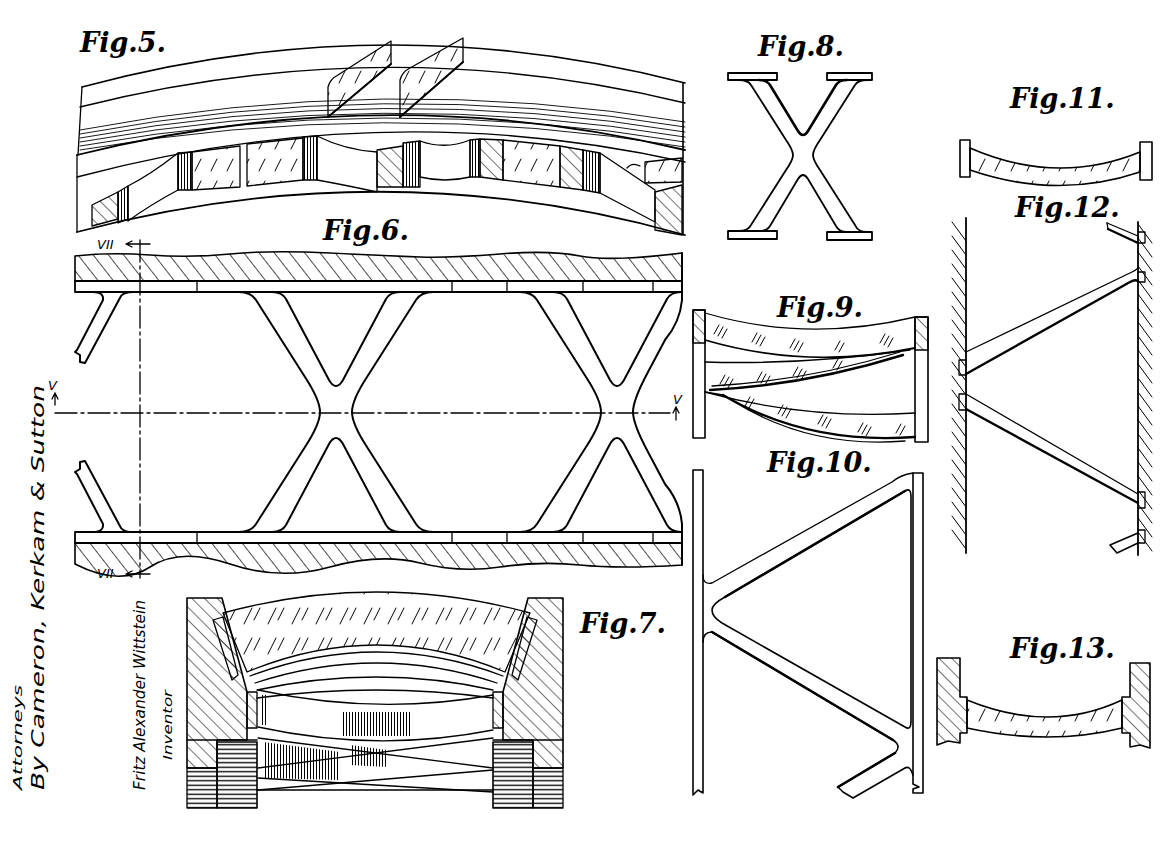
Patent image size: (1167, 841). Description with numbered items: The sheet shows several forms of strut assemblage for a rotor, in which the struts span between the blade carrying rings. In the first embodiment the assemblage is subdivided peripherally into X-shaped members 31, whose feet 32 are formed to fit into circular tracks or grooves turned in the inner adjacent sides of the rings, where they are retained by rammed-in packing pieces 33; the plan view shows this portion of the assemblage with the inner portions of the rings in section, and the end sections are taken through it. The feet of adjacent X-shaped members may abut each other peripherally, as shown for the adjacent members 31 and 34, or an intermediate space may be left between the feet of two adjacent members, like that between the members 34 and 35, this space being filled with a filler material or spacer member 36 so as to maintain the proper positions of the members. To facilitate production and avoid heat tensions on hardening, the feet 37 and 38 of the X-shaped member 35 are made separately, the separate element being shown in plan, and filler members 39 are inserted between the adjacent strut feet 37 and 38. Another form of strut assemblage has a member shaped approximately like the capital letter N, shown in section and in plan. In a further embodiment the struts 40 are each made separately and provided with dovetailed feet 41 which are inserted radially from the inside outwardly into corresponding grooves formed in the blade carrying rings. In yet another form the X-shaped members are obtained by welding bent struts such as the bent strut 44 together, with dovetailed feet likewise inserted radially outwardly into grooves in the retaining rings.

In FIG. 5, the X-shaped member 31 is at (137, 203).
In FIG. 6, the X-shaped member 31 is at (111, 311).
In FIG. 7, the X-shaped member 31 is at (429, 780).
In FIG. 5, the feet 32 is at (221, 178).
In FIG. 6, the feet 32 is at (183, 293).
In FIG. 7, the feet 32 is at (500, 712).
In FIG. 7, the packing pieces 33 is at (500, 737).
In FIG. 5, the X-shaped member 34 is at (366, 164).
In FIG. 6, the X-shaped member 34 is at (297, 325).
In FIG. 5, the X-shaped member 35 is at (678, 222).
In FIG. 6, the X-shaped member 35 is at (654, 349).
In FIG. 8, the X-shaped member 35 is at (787, 128).
In FIG. 5, the filler material or spacer member 36 is at (537, 173).
In FIG. 6, the filler material or spacer member 36 is at (481, 293).
In FIG. 6, the foot 37 is at (537, 294).
In FIG. 6, the foot 38 is at (683, 286).
In FIG. 8, the foot 38 is at (741, 81).
In FIG. 6, the filler members 39 is at (626, 294).
In FIG. 11, the struts 40 is at (971, 149).
In FIG. 12, the struts 40 is at (1064, 461).
In FIG. 12, the dovetailed feet 41 is at (966, 395).
In FIG. 13, the bent strut 44 is at (1040, 736).